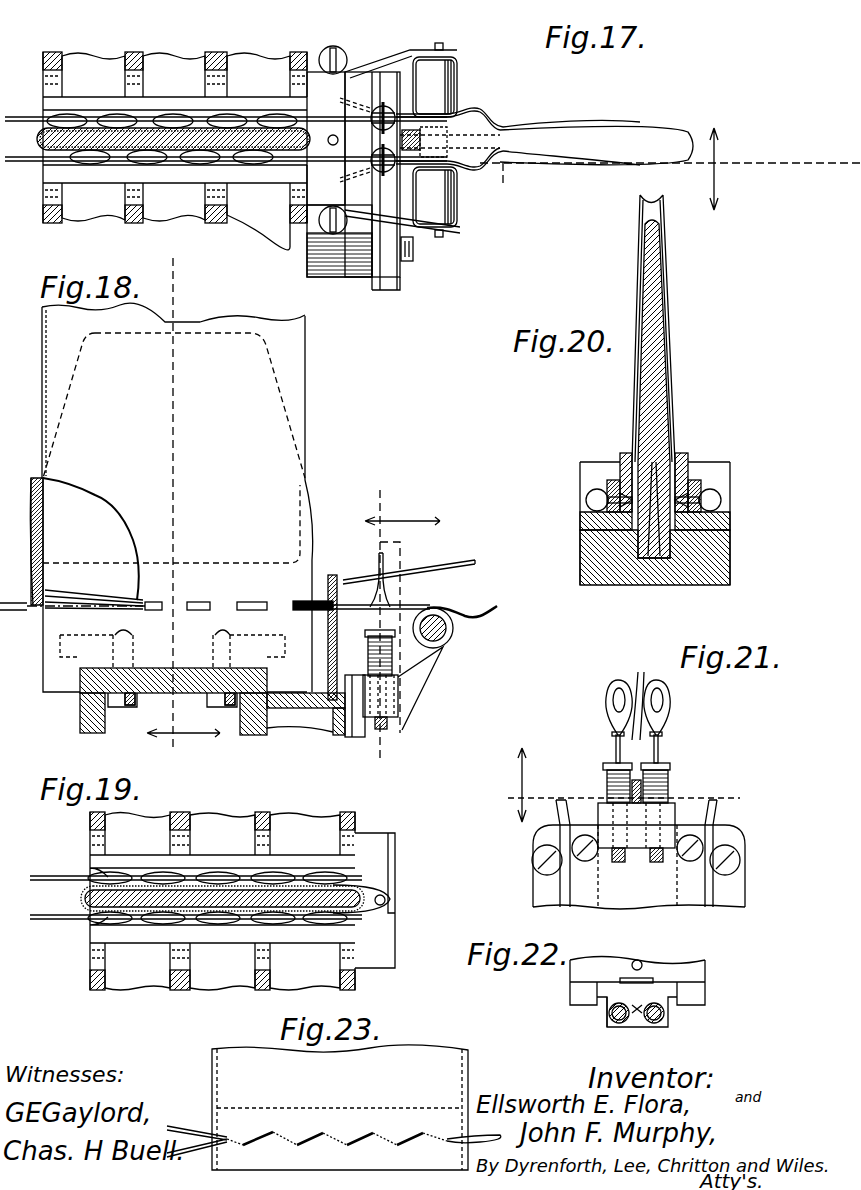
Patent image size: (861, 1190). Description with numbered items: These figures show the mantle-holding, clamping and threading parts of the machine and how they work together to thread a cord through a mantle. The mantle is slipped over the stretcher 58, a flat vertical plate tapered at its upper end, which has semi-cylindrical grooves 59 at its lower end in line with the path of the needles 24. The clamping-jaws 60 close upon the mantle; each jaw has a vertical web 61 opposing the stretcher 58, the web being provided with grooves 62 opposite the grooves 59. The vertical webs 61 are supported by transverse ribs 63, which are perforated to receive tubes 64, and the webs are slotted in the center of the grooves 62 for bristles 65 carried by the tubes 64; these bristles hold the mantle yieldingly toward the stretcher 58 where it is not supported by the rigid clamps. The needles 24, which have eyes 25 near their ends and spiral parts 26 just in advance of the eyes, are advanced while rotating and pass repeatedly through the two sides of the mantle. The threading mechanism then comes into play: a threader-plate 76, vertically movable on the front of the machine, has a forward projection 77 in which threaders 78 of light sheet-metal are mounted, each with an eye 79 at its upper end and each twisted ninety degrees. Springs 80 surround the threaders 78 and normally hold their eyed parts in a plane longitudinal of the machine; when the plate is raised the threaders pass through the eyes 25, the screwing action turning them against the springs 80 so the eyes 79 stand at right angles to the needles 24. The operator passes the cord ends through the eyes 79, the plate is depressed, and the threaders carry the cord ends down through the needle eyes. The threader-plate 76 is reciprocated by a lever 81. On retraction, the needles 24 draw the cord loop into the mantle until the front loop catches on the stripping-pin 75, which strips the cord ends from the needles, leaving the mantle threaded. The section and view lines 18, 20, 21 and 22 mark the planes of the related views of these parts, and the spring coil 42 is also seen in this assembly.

In FIG. 17, the section line of Fig. 18 is at (670, 169).
In FIG. 18, the section line of Fig. 20 is at (183, 752).
In FIG. 18, the section line of Fig. 21 is at (398, 609).
In FIG. 21, the section line of Fig. 22 is at (602, 785).
In FIG. 17, the needles 24 is at (121, 122).
In FIG. 18, the needles 24 is at (58, 592).
In FIG. 19, the needles 24 is at (196, 897).
In FIG. 21, the needles 24 is at (634, 692).
In FIG. 23, the needles 24 is at (334, 1141).
In FIG. 17, the eyes 25 is at (393, 108).
In FIG. 18, the eyes 25 is at (409, 572).
In FIG. 21, the eyes 25 is at (622, 749).
In FIG. 17, the spiral parts 26 is at (497, 153).
In FIG. 18, the spiral parts 26 is at (487, 607).
In FIG. 17, the coil spring 42 is at (447, 210).
In FIG. 18, the coil spring 42 is at (454, 633).
In FIG. 17, the stretcher 58 is at (325, 105).
In FIG. 18, the stretcher 58 is at (92, 507).
In FIG. 19, the stretcher 58 is at (187, 903).
In FIG. 20, the stretcher 58 is at (645, 343).
In FIG. 17, the semi-cylindrical grooves 59 is at (310, 128).
In FIG. 18, the semi-cylindrical grooves 59 is at (95, 594).
In FIG. 19, the semi-cylindrical grooves 59 is at (335, 889).
In FIG. 20, the semi-cylindrical grooves 59 is at (658, 512).
In FIG. 17, the clamping-jaws 60 is at (150, 193).
In FIG. 19, the clamping-jaws 60 is at (127, 842).
In FIG. 20, the clamping-jaws 60 is at (718, 537).
In FIG. 17, the vertical web 61 is at (240, 177).
In FIG. 18, the vertical web 61 is at (244, 562).
In FIG. 19, the vertical web 61 is at (230, 937).
In FIG. 20, the vertical web 61 is at (630, 452).
In FIG. 17, the grooves 62 is at (258, 113).
In FIG. 19, the grooves 62 is at (312, 867).
In FIG. 20, the grooves 62 is at (609, 480).
In FIG. 17, the transverse ribs 63 is at (62, 58).
In FIG. 19, the transverse ribs 63 is at (346, 812).
In FIG. 20, the tubes 64 is at (586, 493).
In FIG. 20, the bristles 65 is at (616, 496).
In FIG. 17, the stripping-pin 75 is at (320, 206).
In FIG. 18, the stripping-pin 75 is at (333, 574).
In FIG. 19, the stripping-pin 75 is at (394, 902).
In FIG. 22, the stripping-pin 75 is at (642, 963).
In FIG. 17, the threader-plate 76 is at (358, 100).
In FIG. 18, the threader-plate 76 is at (353, 732).
In FIG. 21, the threader-plate 76 is at (638, 854).
In FIG. 22, the threader-plate 76 is at (680, 988).
In FIG. 17, the forward projection 77 is at (400, 125).
In FIG. 18, the forward projection 77 is at (386, 708).
In FIG. 21, the forward projection 77 is at (636, 832).
In FIG. 22, the forward projection 77 is at (630, 1027).
In FIG. 17, the threaders 78 is at (380, 106).
In FIG. 18, the threaders 78 is at (386, 565).
In FIG. 21, the threaders 78 is at (612, 729).
In FIG. 21, the eye 79 is at (607, 699).
In FIG. 18, the springs 80 is at (392, 663).
In FIG. 21, the springs 80 is at (668, 796).
In FIG. 22, the springs 80 is at (660, 1027).
In FIG. 17, the lever 81 is at (387, 280).